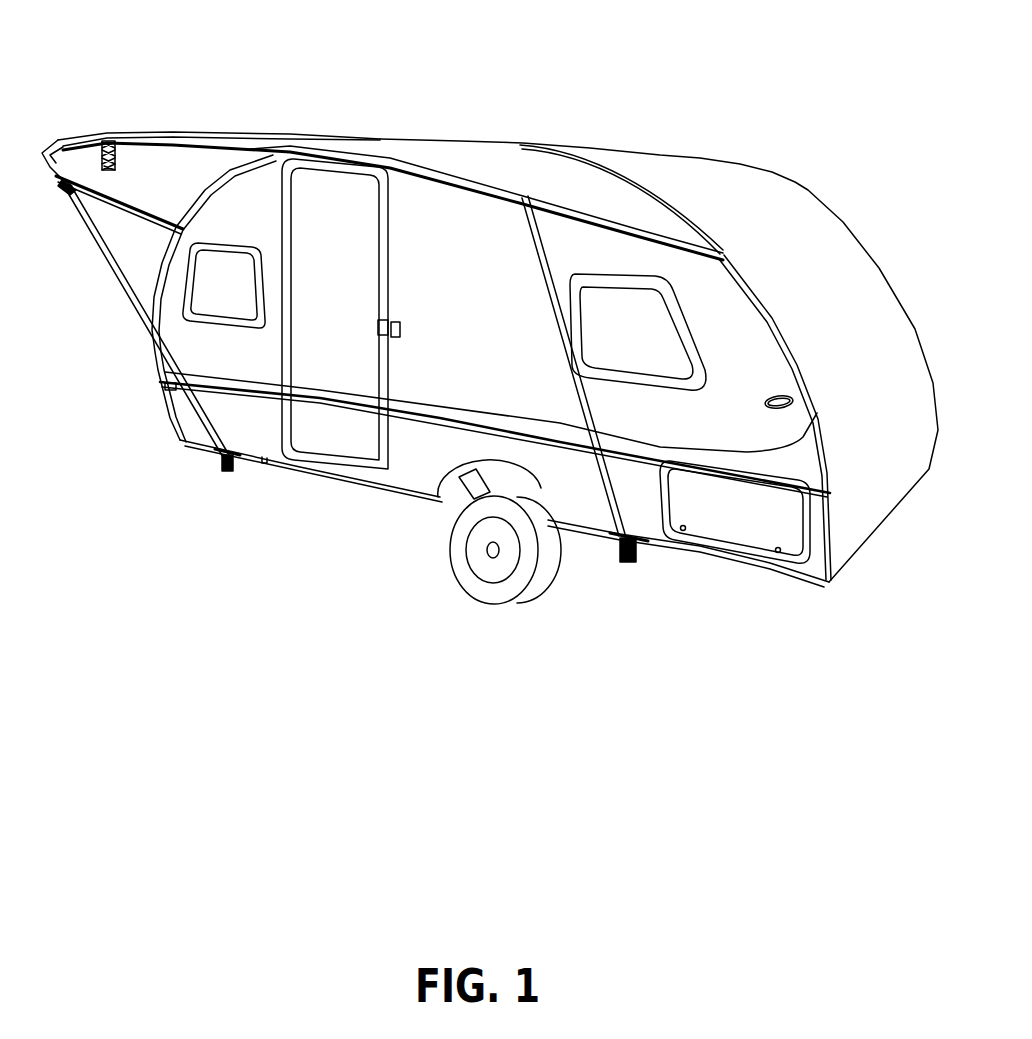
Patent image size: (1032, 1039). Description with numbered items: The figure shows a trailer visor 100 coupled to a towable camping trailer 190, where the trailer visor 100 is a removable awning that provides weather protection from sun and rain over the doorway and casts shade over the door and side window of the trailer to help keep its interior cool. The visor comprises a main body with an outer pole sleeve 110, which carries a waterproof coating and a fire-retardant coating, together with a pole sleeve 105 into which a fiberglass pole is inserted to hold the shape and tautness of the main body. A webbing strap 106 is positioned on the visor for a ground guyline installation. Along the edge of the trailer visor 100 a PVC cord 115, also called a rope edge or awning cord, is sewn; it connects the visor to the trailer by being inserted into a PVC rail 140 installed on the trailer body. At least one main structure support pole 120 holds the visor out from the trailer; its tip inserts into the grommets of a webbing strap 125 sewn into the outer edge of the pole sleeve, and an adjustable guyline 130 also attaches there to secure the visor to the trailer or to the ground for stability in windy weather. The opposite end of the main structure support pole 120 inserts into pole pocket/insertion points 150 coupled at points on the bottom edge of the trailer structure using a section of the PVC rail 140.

The trailer visor 100 is at (370, 163).
The pole sleeve 105 is at (94, 138).
The webbing strap 106 is at (107, 140).
The main body with an outer pole sleeve 110 is at (412, 152).
The PVC cord 115 is at (604, 162).
The main structure support pole 120 is at (150, 308).
The webbing strap 125 is at (70, 185).
The adjustable guyline 130 is at (598, 490).
The PVC rail 140 is at (683, 550).
The pole pocket/insertion points 150 is at (638, 556).
The towable camping trailer 190 is at (812, 197).